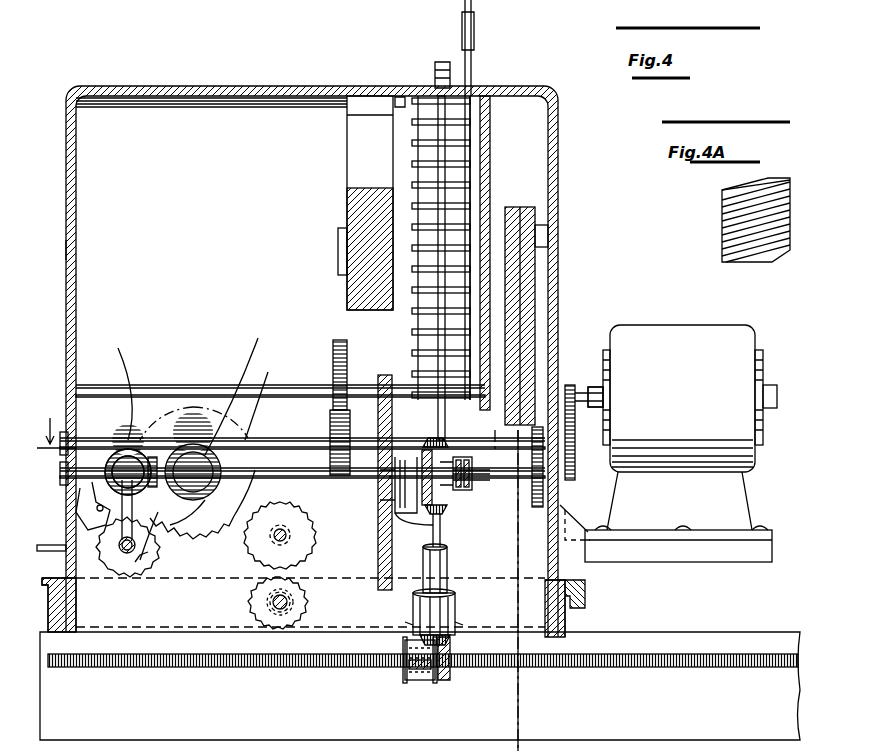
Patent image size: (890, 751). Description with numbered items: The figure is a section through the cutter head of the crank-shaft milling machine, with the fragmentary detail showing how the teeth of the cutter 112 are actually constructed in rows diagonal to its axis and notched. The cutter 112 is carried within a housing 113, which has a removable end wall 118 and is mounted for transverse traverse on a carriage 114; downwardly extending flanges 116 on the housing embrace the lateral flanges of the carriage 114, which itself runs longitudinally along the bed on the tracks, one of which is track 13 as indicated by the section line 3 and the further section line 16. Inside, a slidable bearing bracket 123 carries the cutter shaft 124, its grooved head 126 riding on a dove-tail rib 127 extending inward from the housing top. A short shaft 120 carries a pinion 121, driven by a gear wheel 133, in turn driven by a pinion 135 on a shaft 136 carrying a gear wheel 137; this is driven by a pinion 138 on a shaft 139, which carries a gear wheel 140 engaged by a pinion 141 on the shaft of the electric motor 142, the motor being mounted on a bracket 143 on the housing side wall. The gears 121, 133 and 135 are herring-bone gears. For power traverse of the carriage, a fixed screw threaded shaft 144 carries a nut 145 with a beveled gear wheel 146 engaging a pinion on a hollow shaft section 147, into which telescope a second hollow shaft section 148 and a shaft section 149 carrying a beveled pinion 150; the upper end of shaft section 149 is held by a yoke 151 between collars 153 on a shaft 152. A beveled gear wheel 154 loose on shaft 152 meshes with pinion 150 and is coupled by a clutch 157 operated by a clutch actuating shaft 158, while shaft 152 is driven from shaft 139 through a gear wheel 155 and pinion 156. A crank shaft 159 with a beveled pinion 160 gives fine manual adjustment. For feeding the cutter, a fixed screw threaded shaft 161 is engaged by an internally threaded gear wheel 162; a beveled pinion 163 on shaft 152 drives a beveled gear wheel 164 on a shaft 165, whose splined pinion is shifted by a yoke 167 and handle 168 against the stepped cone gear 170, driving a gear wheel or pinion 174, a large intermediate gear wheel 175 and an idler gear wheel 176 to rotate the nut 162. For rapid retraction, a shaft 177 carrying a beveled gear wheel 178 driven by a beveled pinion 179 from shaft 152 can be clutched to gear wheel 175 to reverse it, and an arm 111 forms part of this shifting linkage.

In FIG. 4, the section line 3 is at (545, 8).
In FIG. 4, the base 13 is at (420, 686).
In FIG. 4, the section line 16 is at (277, 575).
In FIG. 4, the pawl arm 111 is at (120, 565).
In FIG. 4, the cutter 112 is at (462, 172).
In FIG. 4A, the cutter 112 is at (722, 198).
In FIG. 4, the housing 113 is at (126, 78).
In FIG. 4, the carriage 114 is at (566, 620).
In FIG. 4, the downwardly extending flanges 116 is at (586, 592).
In FIG. 4, the removable end wall 118 is at (76, 248).
In FIG. 4, the short shaft 120 is at (548, 236).
In FIG. 4, the pinion 121 is at (536, 218).
In FIG. 4, the bearing bracket 123 is at (347, 196).
In FIG. 4, the shaft 124 is at (338, 246).
In FIG. 4, the grooved head 126 is at (371, 108).
In FIG. 4, the rib 127 is at (194, 98).
In FIG. 4, the gear wheel 133 is at (548, 300).
In FIG. 4, the pinion 135 is at (556, 350).
In FIG. 4, the shaft 136 is at (216, 385).
In FIG. 4, the gear wheel 137 is at (334, 344).
In FIG. 4, the pinion 138 is at (330, 430).
In FIG. 4, the shaft 139 is at (478, 447).
In FIG. 4, the gear wheel 140 is at (575, 450).
In FIG. 4, the pinion 141 is at (568, 385).
In FIG. 4, the electric motor 142 is at (702, 330).
In FIG. 4, the bracket 143 is at (755, 560).
In FIG. 4, the fixed screw threaded shaft 144 is at (616, 668).
In FIG. 4, the nut 145 is at (408, 682).
In FIG. 4, the beveled gear wheel 146 is at (452, 680).
In FIG. 4, the hollow shaft section 147 is at (455, 611).
In FIG. 4, the second hollow shaft section 148 is at (447, 573).
In FIG. 4, the shaft section 149 is at (441, 524).
In FIG. 4, the beveled pinion 150 is at (414, 532).
In FIG. 4, the yoke 151 is at (395, 503).
In FIG. 4, the shaft 152 is at (498, 495).
In FIG. 4, the collars 153 is at (428, 452).
In FIG. 4, the beveled gear wheel 154 is at (430, 438).
In FIG. 4, the gear wheel 155 is at (592, 505).
In FIG. 4, the pinion 156 is at (595, 425).
In FIG. 4, the clutch 157 is at (470, 500).
In FIG. 4, the clutch actuating shaft 158 is at (472, 78).
In FIG. 4, the shaft 159 is at (446, 132).
In FIG. 4, the beveled pinion 160 is at (440, 438).
In FIG. 4, the screw threaded shaft 161 is at (296, 590).
In FIG. 4, the internally threaded gear wheel 162 is at (305, 606).
In FIG. 4, the beveled pinion 163 is at (184, 492).
In FIG. 4, the beveled gear wheel 164 is at (126, 450).
In FIG. 4, the shaft 165 is at (113, 385).
In FIG. 4, the yoke 167 is at (134, 565).
In FIG. 4, the handle 168 is at (45, 545).
In FIG. 4, the cone gear 170 is at (142, 566).
In FIG. 4, the gear wheel or pinion 174 is at (152, 556).
In FIG. 4, the intermediate gear wheel 175 is at (195, 455).
In FIG. 4, the idler gear wheel 176 is at (310, 541).
In FIG. 4, the shaft 177 is at (240, 387).
In FIG. 4, the beveled gear wheel 178 is at (235, 512).
In FIG. 4, the beveled pinion 179 is at (263, 397).